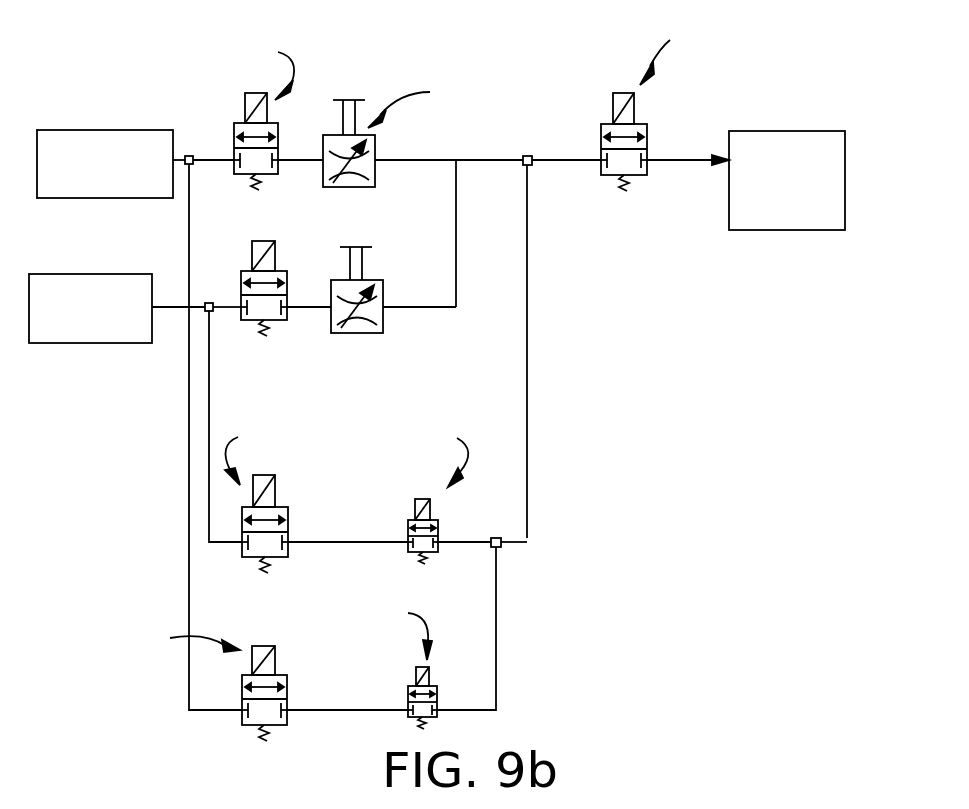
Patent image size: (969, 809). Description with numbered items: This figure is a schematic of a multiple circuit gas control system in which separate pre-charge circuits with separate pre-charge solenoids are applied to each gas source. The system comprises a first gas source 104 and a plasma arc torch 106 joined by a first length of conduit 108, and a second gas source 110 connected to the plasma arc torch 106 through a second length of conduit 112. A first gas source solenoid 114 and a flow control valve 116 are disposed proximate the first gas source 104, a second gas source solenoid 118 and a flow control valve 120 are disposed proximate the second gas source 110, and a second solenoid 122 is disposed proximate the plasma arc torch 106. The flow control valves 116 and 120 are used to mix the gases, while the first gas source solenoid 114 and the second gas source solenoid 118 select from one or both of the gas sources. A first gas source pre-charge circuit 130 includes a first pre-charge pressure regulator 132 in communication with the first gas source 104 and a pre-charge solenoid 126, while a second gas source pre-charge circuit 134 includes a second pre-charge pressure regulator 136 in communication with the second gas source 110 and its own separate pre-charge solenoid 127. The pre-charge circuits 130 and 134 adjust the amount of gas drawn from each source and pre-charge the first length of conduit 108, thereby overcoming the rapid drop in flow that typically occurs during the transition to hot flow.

The first gas source 104 is at (148, 130).
The plasma arc torch 106 is at (780, 230).
The first length of conduit 108 is at (575, 158).
The second gas source 110 is at (110, 343).
The second length of conduit 112 is at (456, 248).
The first gas source solenoid 114 is at (244, 120).
The flow control valve 116 is at (376, 176).
The second gas source solenoid 118 is at (241, 276).
The flow control valve 120 is at (376, 280).
The second solenoid 122 is at (637, 176).
The pre-charge solenoid 126 is at (437, 520).
The pre-charge solenoid 127 is at (408, 698).
The first gas source pre-charge circuit 130 is at (228, 564).
The first pre-charge pressure regulator 132 is at (288, 508).
The second gas source pre-charge circuit 134 is at (211, 732).
The second pre-charge pressure regulator 136 is at (280, 672).